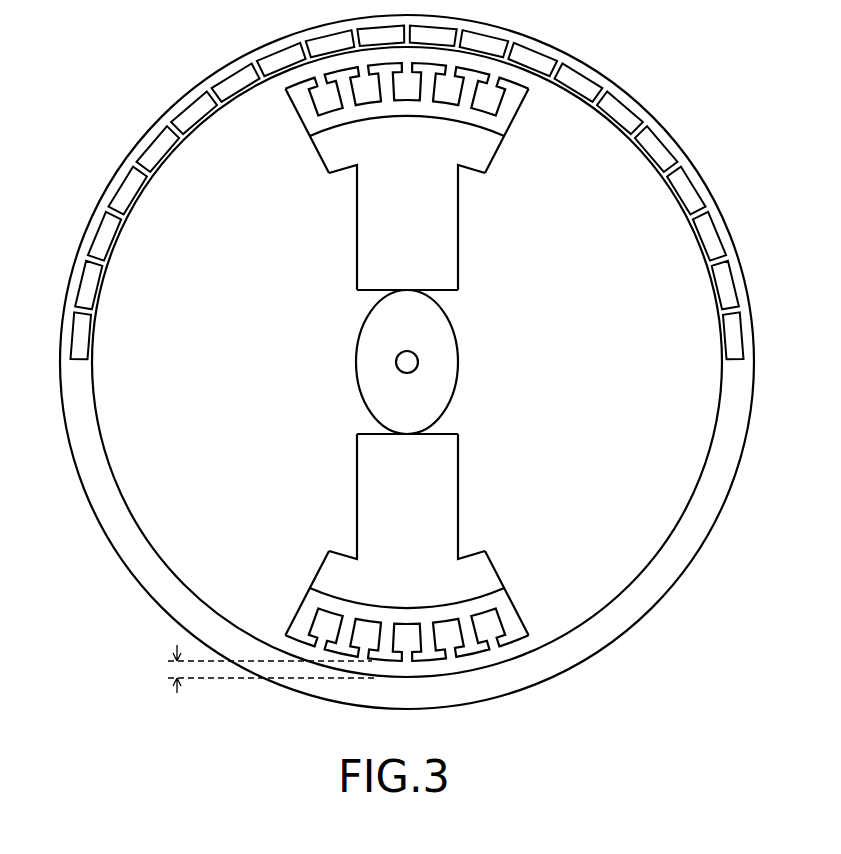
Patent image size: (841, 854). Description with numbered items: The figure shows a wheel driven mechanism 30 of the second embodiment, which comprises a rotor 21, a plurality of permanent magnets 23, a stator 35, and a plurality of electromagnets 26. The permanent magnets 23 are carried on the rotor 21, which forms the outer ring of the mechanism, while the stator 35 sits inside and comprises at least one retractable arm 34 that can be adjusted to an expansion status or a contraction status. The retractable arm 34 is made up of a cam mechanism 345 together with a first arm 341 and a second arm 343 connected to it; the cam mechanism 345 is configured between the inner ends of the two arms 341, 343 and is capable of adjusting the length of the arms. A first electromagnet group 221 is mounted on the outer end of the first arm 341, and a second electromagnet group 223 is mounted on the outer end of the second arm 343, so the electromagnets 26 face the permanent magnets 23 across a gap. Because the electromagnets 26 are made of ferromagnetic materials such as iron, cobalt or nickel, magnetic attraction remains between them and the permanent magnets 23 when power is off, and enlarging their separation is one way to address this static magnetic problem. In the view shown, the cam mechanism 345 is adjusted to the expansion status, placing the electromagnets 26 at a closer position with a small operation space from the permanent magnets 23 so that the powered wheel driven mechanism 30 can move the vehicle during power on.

The wheel driven mechanism 30 is at (107, 88).
The rotor 21 is at (764, 359).
The permanent magnets 23 is at (729, 282).
The electromagnets 26 is at (521, 100).
The stator 35 is at (512, 147).
The first electromagnet group 221 is at (397, 130).
The second electromagnet group 223 is at (398, 601).
The retractable arm 34 is at (270, 273).
The first arm 341 is at (357, 288).
The second arm 343 is at (357, 439).
The cam mechanism 345 is at (357, 363).